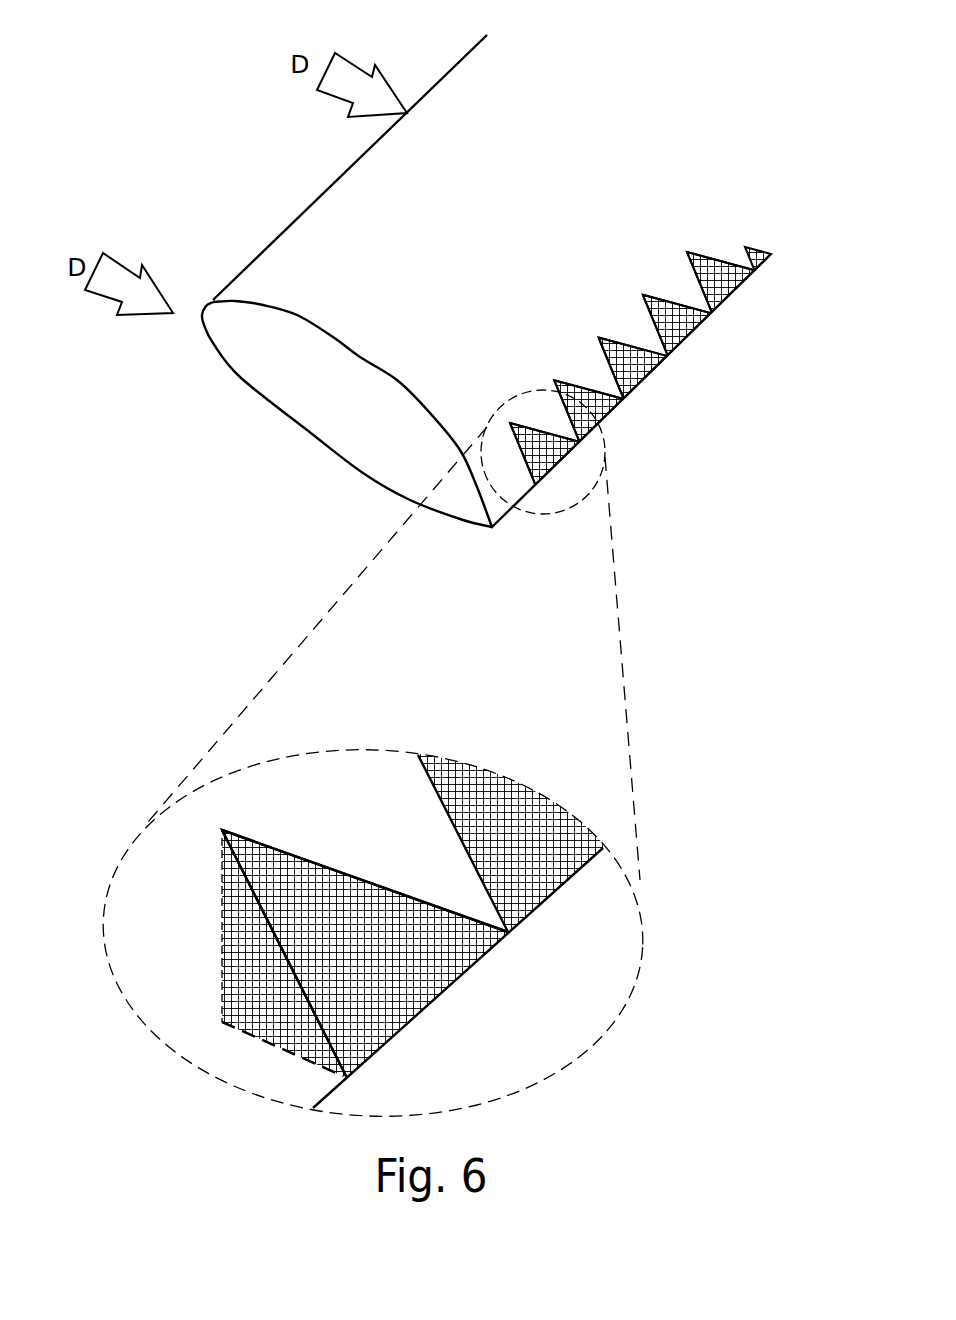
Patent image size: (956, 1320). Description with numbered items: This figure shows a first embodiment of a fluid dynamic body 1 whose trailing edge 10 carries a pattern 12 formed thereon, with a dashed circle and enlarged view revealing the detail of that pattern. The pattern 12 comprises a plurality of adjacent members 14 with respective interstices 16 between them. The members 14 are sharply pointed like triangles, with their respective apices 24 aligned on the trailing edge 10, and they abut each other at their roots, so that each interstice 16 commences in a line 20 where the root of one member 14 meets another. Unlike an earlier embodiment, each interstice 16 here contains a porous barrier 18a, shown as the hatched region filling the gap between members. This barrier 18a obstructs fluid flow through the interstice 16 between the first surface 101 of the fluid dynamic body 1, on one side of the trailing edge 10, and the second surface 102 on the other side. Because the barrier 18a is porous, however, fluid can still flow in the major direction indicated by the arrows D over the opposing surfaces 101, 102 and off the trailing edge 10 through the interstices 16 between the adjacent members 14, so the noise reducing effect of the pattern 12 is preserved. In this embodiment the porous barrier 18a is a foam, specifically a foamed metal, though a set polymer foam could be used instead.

The fluid dynamic body 1 is at (334, 281).
The first surface 101 is at (295, 282).
The second surface 102 is at (293, 382).
The pattern 12 is at (434, 658).
The adjacent members 14 is at (672, 278).
The interstices 16 is at (727, 273).
The trailing edge 10 is at (733, 297).
The porous barrier 18a is at (707, 310).
The apices 24 is at (678, 288).
The line 20 is at (220, 873).